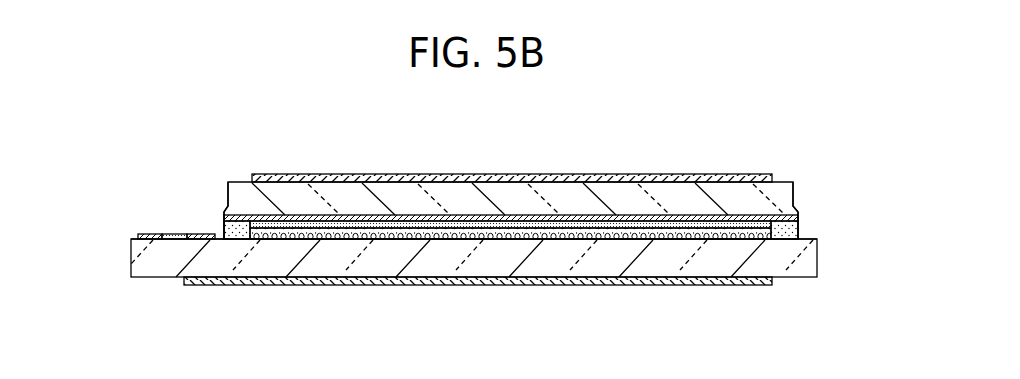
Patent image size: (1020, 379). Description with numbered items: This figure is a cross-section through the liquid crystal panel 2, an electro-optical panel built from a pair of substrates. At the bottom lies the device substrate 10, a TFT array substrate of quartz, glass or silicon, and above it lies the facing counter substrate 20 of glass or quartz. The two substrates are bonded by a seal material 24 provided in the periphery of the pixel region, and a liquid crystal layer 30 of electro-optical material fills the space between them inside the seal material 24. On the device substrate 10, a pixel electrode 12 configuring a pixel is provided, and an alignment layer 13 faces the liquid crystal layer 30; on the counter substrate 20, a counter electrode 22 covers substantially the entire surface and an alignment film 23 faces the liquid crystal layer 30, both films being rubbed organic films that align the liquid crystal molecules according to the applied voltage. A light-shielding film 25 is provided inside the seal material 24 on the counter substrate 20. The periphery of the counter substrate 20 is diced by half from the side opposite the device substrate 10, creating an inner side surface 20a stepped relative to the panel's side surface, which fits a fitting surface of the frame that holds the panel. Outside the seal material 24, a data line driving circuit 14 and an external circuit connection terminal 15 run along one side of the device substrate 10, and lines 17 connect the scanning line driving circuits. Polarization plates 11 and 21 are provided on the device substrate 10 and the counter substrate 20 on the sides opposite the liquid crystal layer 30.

The liquid crystal panel 2 is at (794, 167).
The device substrate 10 is at (313, 263).
The polarization plate 11 is at (500, 281).
The pixel electrode 12 is at (552, 241).
The alignment layer 13 is at (653, 241).
The data line driving circuit 14 is at (201, 234).
The external circuit connection terminal 15 is at (150, 234).
The lines 17 is at (172, 234).
The counter substrate 20 is at (384, 191).
The inner side surface 20a is at (228, 184).
The polarization plate 21 is at (431, 176).
The counter electrode 22 is at (491, 217).
The alignment film 23 is at (617, 221).
The seal material 24 is at (238, 228).
The light-shielding film 25 is at (268, 218).
The liquid crystal layer 30 is at (435, 227).